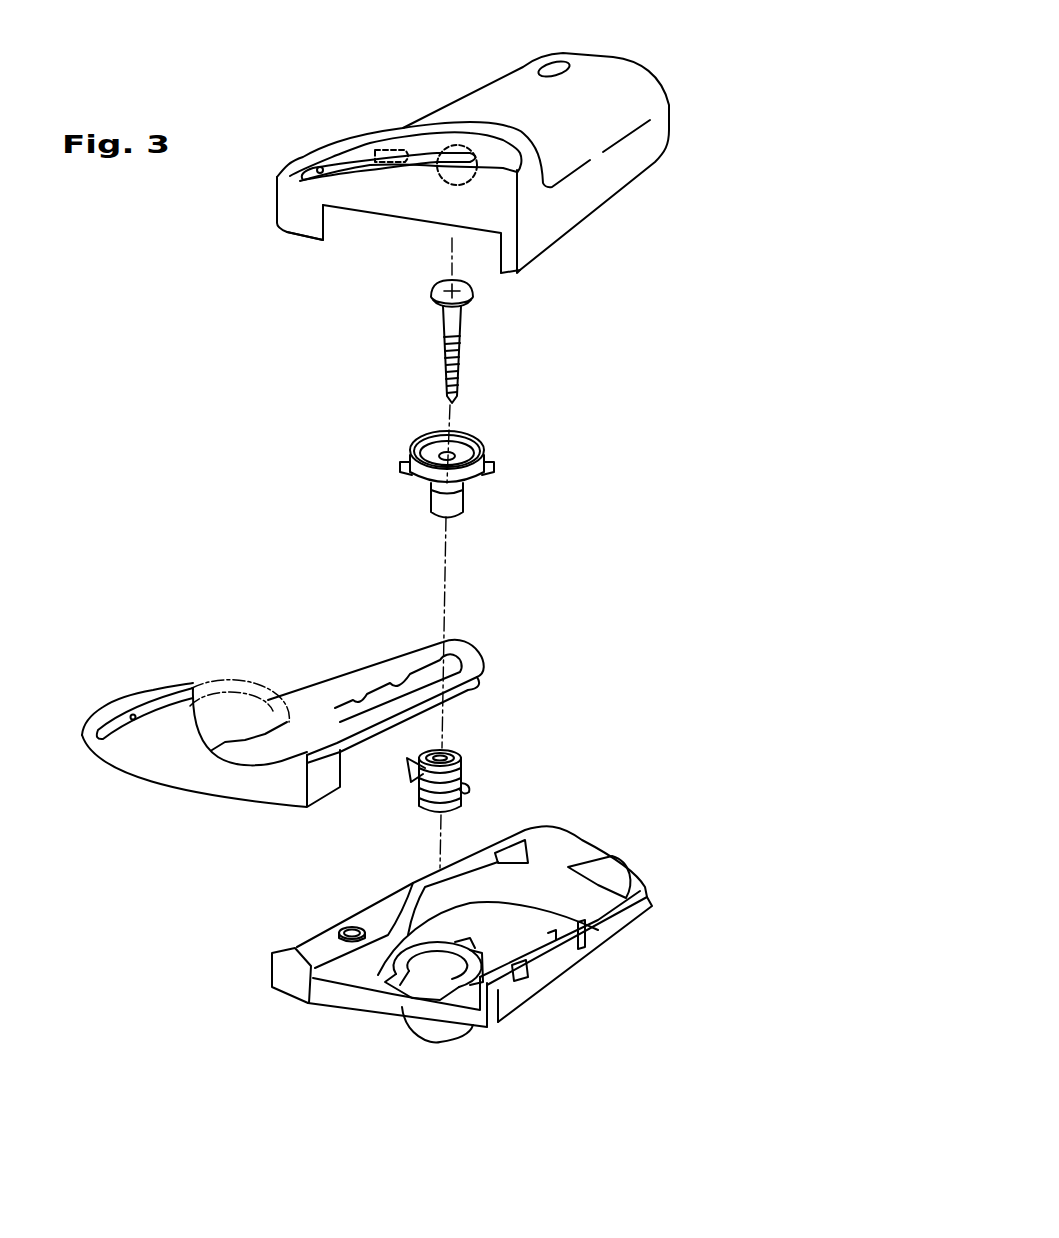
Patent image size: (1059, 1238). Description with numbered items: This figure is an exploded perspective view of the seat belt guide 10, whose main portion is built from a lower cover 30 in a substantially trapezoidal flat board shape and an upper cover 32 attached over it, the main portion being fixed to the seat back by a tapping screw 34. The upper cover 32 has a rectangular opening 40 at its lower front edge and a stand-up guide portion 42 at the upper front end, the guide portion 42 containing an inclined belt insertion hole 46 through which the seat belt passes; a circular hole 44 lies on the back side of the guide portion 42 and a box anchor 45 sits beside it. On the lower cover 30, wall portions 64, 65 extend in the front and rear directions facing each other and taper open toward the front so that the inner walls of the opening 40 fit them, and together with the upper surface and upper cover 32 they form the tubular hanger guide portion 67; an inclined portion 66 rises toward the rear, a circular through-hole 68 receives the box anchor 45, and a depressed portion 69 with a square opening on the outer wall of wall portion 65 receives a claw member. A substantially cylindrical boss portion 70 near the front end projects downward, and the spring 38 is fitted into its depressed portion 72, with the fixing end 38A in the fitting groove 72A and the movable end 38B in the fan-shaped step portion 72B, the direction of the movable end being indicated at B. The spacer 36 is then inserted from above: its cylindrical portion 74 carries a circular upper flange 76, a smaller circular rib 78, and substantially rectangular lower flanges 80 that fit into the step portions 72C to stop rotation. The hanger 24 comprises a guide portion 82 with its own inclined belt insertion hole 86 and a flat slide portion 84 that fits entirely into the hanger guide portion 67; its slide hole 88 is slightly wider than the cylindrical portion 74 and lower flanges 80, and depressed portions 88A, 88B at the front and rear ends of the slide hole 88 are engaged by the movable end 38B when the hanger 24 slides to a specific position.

The seat belt guide 10 is at (318, 68).
The upper cover 32 is at (447, 103).
The guide portion 42 is at (403, 128).
The box anchor 45 is at (372, 133).
The belt insertion hole 46 is at (318, 170).
The circular hole 44 is at (437, 178).
The rectangular opening 40 is at (330, 243).
The tapping screw 34 is at (466, 358).
The spacer 36 is at (502, 465).
The rib 78 is at (420, 440).
The upper flange 76 is at (412, 453).
The lower flanges 80 is at (404, 469).
The cylindrical portion 74 is at (460, 502).
The hanger 24 is at (265, 660).
The belt insertion hole 86 is at (131, 714).
The guide portion 82 is at (190, 683).
The depressed portion 88A is at (230, 743).
The slide portion 84 is at (345, 680).
The slide hole 88 is at (372, 676).
The depressed portion 88B is at (445, 653).
The spring 38 is at (480, 764).
The fixing end 38A is at (471, 786).
The movable end 38B is at (410, 763).
The lower cover 30 is at (574, 978).
The wall portion 64 is at (398, 910).
The step portions 72C is at (428, 945).
The inclined portion 66 is at (604, 870).
The wall portion 65 is at (586, 932).
The depressed portion 69 is at (518, 978).
The through-hole 68 is at (348, 928).
The hanger guide portion 67 is at (355, 982).
The depressed portion 72 is at (436, 962).
The fitting groove 72A is at (470, 952).
The step portion 72B is at (412, 992).
The boss portion 70 is at (441, 1042).
The section B is at (400, 828).